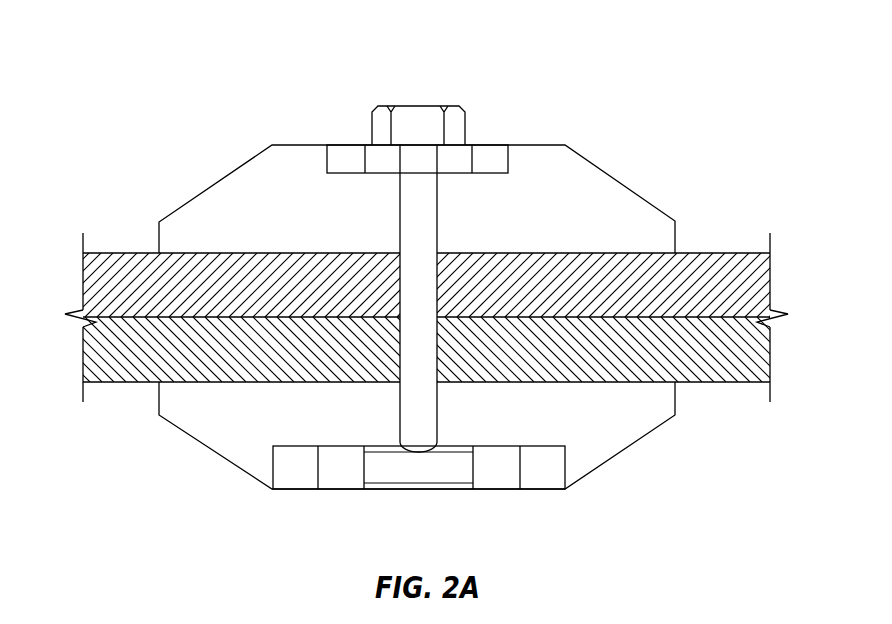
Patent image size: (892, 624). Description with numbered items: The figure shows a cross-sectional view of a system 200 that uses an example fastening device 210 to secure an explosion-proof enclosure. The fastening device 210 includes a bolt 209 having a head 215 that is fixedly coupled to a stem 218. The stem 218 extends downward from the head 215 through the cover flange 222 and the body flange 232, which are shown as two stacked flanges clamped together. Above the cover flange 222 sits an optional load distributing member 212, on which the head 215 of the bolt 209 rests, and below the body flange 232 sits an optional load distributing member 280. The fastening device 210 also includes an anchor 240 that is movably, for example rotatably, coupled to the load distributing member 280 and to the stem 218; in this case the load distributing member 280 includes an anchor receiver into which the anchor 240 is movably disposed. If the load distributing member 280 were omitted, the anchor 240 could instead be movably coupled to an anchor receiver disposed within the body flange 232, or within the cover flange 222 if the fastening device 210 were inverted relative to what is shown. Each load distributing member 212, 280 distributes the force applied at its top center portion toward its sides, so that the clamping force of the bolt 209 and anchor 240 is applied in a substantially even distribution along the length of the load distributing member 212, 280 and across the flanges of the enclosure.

The system 200 is at (144, 51).
The bolt 209 is at (418, 243).
The fastening device 210 is at (419, 500).
The load distributing member 212 is at (307, 231).
The head 215 is at (467, 124).
The stem 218 is at (425, 222).
The cover flange 222 is at (120, 253).
The body flange 232 is at (121, 382).
The anchor 240 is at (393, 481).
The load distributing member 280 is at (307, 426).